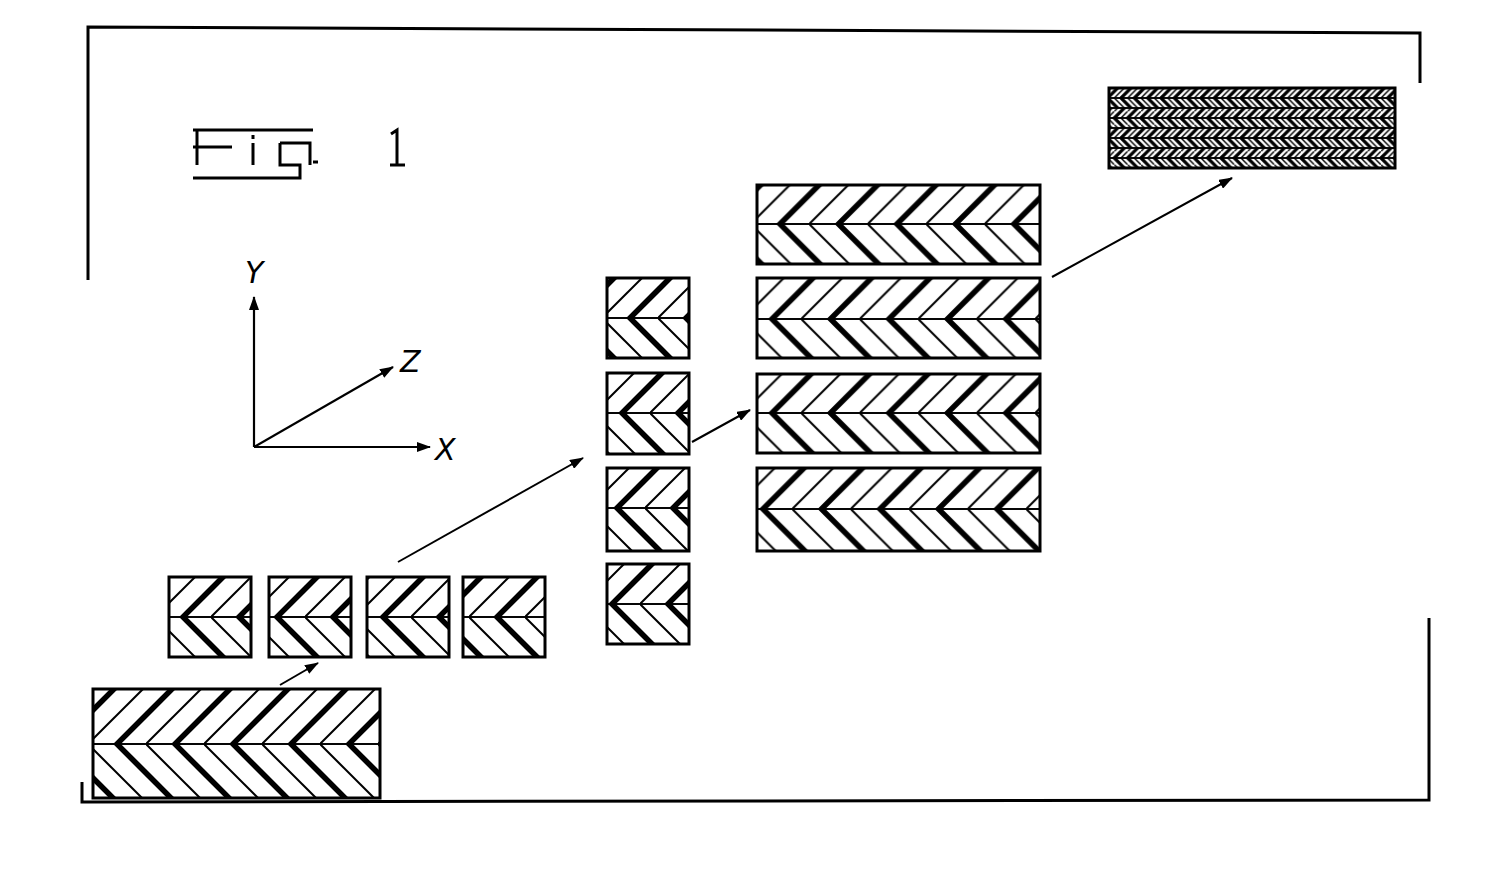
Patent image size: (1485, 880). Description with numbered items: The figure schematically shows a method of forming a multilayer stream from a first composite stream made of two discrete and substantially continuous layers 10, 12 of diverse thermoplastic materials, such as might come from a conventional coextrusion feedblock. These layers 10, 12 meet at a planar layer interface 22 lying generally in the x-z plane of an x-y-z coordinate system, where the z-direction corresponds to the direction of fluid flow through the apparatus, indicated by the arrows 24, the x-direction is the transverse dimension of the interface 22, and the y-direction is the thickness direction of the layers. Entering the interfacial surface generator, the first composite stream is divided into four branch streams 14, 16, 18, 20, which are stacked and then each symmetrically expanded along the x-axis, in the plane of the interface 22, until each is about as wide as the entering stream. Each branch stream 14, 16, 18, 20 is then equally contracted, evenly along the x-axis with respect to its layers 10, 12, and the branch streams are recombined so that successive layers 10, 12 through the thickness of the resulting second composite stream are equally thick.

The layer 10 is at (180, 603).
The layer 12 is at (180, 632).
The branch stream 14 is at (188, 565).
The branch stream 16 is at (288, 572).
The branch stream 18 is at (383, 574).
The branch stream 20 is at (533, 672).
The planar layer interface 22 is at (380, 741).
The arrows 24 is at (277, 680).